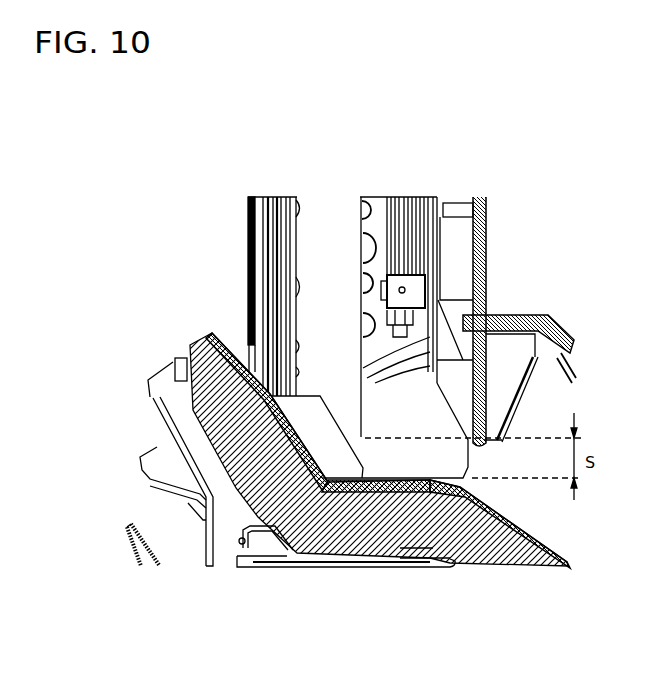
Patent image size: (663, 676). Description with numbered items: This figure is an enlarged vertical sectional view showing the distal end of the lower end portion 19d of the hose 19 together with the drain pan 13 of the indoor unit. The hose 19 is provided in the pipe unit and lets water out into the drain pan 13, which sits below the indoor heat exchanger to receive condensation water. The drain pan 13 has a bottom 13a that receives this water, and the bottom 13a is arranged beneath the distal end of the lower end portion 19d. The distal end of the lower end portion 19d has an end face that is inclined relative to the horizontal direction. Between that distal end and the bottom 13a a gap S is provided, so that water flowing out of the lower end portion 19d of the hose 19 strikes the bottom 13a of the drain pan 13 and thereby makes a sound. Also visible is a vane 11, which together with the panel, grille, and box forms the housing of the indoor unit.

The vane 11 is at (130, 536).
The drain pan 13 is at (235, 434).
The bottom 13a is at (448, 478).
The hose 19 is at (330, 210).
The lower end portion 19d is at (343, 390).